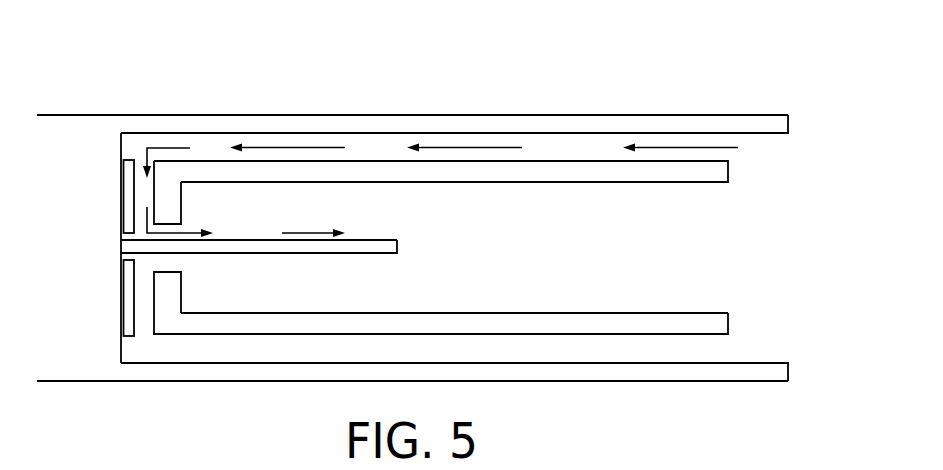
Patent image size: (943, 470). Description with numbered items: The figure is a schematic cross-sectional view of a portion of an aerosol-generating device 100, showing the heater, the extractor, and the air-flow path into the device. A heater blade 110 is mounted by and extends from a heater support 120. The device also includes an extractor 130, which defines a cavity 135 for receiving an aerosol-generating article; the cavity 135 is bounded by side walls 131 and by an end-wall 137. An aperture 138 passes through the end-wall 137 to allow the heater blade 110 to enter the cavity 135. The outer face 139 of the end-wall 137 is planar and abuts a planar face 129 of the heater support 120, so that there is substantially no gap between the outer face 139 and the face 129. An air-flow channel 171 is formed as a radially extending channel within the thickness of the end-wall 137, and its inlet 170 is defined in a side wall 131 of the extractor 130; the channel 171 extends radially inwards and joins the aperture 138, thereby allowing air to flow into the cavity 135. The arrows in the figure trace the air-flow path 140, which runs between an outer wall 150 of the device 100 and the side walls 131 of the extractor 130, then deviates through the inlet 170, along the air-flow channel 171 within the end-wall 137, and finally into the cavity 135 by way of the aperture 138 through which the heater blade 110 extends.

The aerosol-generating device 100 is at (578, 75).
The heater blade 110 is at (380, 254).
The heater support 120 is at (68, 116).
The planar face of the heater support 129 is at (122, 146).
The extractor 130 is at (740, 320).
The side walls of the extractor 131 is at (603, 318).
The cavity 135 is at (695, 233).
The end-wall 137 is at (182, 205).
The aperture 138 is at (118, 239).
The outer face of the end-wall 139 is at (120, 185).
The air-flow path 140 is at (756, 148).
The outer wall of the device 150 is at (380, 116).
The inlet of the air-flow channel 170 is at (145, 334).
The air-flow channel 171 is at (142, 304).